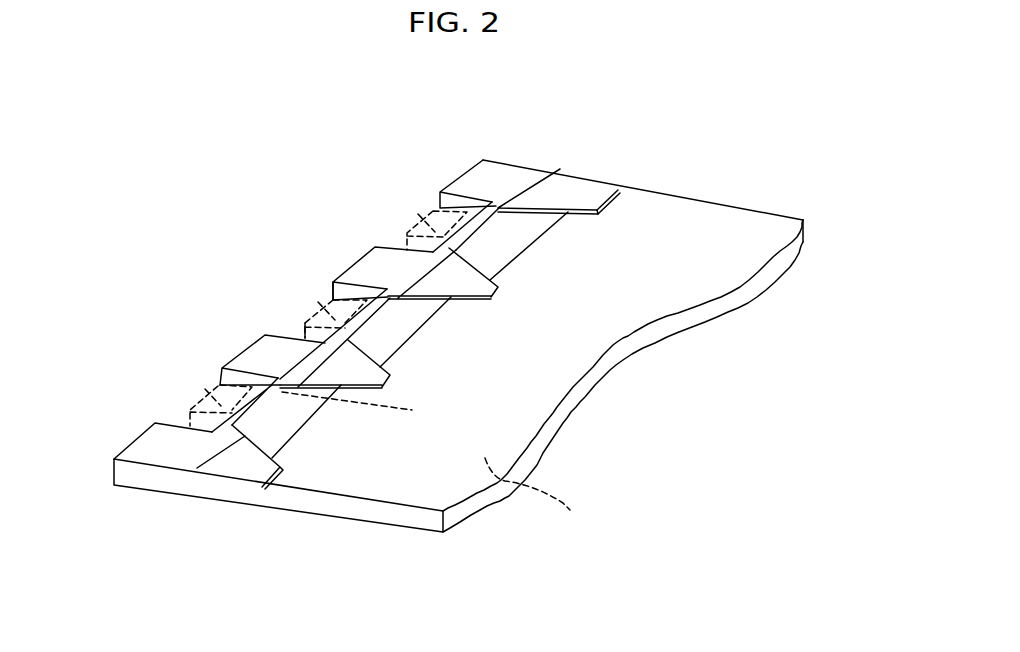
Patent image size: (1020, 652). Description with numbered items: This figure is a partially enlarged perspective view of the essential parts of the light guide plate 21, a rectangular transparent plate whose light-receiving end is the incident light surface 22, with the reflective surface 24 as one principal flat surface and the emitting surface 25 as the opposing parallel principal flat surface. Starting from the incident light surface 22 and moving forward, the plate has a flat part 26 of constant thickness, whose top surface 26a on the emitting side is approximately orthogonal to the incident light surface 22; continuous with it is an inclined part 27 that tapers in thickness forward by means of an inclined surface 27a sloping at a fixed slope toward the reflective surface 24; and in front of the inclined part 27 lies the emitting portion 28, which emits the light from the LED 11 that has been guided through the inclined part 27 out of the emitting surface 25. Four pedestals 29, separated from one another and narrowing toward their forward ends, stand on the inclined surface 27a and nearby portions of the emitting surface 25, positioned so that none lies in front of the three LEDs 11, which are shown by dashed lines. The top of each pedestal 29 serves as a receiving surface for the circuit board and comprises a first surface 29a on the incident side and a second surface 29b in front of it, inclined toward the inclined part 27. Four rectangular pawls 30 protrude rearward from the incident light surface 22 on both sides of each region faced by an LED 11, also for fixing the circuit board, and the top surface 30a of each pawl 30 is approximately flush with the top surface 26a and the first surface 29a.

The light guide plate 21 is at (744, 219).
The LED 11 is at (433, 211).
The incident light surface 22 is at (366, 409).
The reflective surface 24 is at (540, 497).
The emitting surface 25 is at (520, 418).
The flat part 26 is at (330, 288).
The top surface 26a is at (315, 318).
The inclined part 27 is at (507, 227).
The inclined surface 27a is at (440, 200).
The emitting portion 28 is at (708, 223).
The pedestal 29 is at (603, 193).
The first surface 29a is at (552, 176).
The second surface 29b is at (582, 184).
The pawl 30 is at (492, 182).
The top surface 30a is at (507, 170).